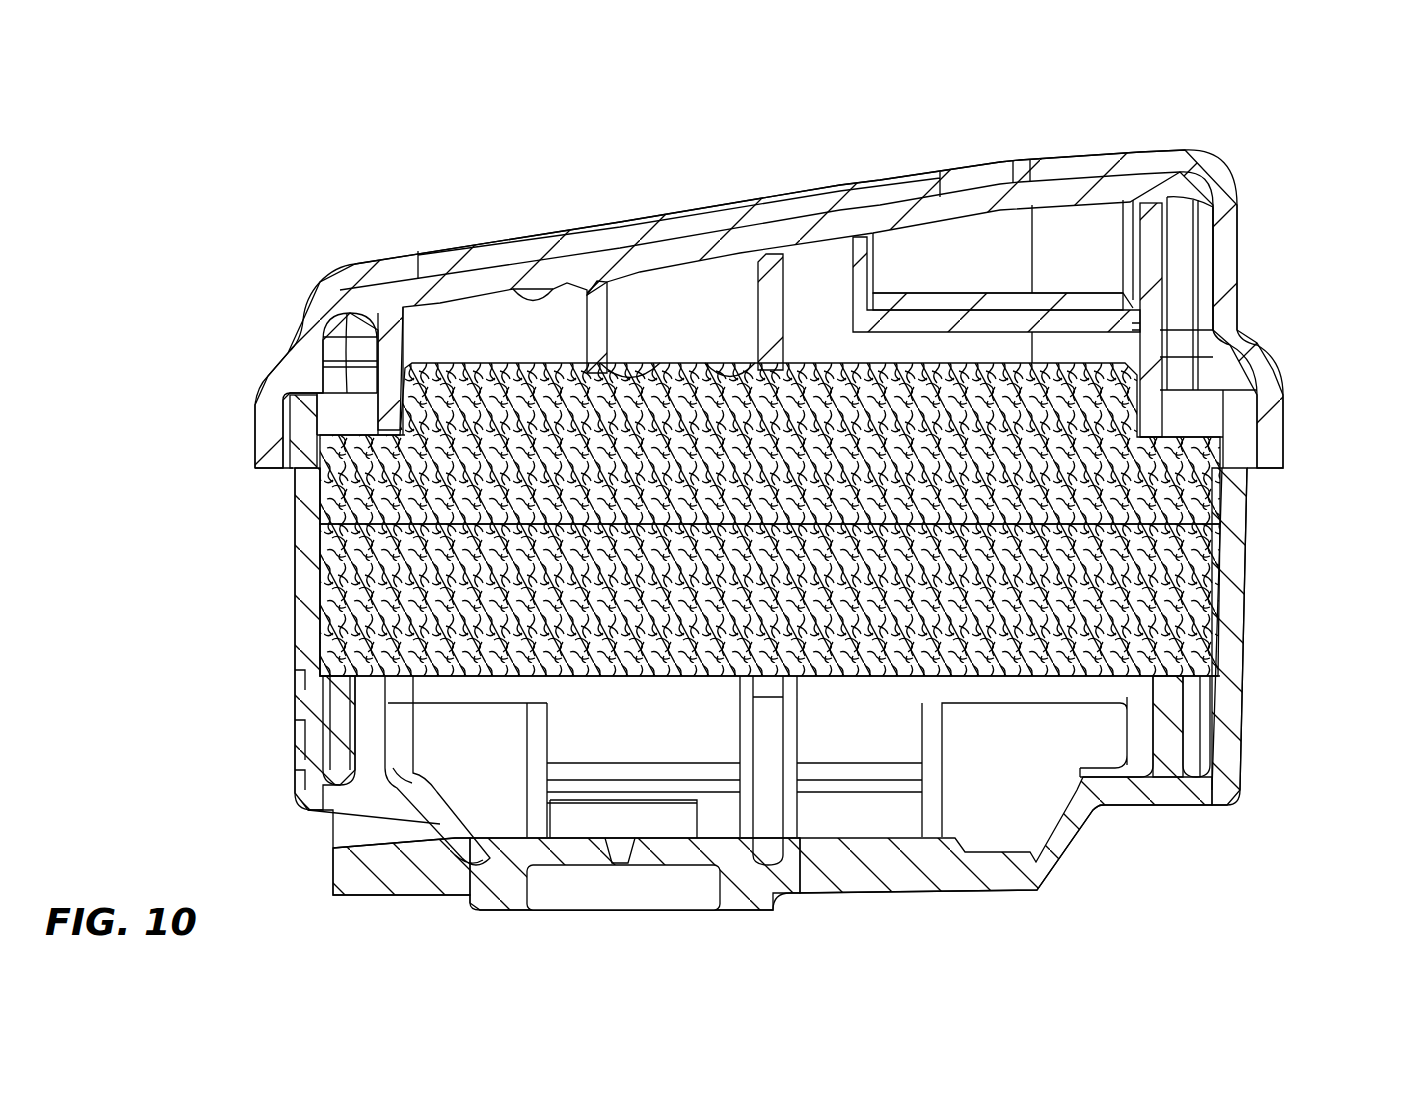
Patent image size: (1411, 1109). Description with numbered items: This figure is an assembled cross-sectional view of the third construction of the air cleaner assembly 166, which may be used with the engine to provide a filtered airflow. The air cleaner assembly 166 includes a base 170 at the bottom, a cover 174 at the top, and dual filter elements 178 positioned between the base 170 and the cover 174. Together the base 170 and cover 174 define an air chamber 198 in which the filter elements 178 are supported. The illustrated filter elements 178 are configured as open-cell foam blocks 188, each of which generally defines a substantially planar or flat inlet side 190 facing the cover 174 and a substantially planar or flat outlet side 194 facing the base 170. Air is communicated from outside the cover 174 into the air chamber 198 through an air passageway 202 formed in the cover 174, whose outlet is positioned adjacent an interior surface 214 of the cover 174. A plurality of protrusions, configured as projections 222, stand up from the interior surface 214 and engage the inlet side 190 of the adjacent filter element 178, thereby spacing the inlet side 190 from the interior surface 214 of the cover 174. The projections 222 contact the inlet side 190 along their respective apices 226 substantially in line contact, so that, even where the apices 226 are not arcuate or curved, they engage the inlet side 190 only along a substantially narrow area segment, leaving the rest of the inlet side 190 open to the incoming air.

The air cleaner assembly 166 is at (600, 96).
The base 170 is at (1118, 797).
The cover 174 is at (397, 262).
The filter elements 178 is at (453, 333).
The open-cell foam blocks 188 is at (1200, 488).
The inlet side 190 is at (820, 367).
The outlet side 194 is at (413, 530).
The air chamber 198 is at (710, 272).
The air passageway 202 is at (987, 232).
The interior surface 214 is at (553, 285).
The projections 222 is at (613, 308).
The apices 226 is at (730, 380).